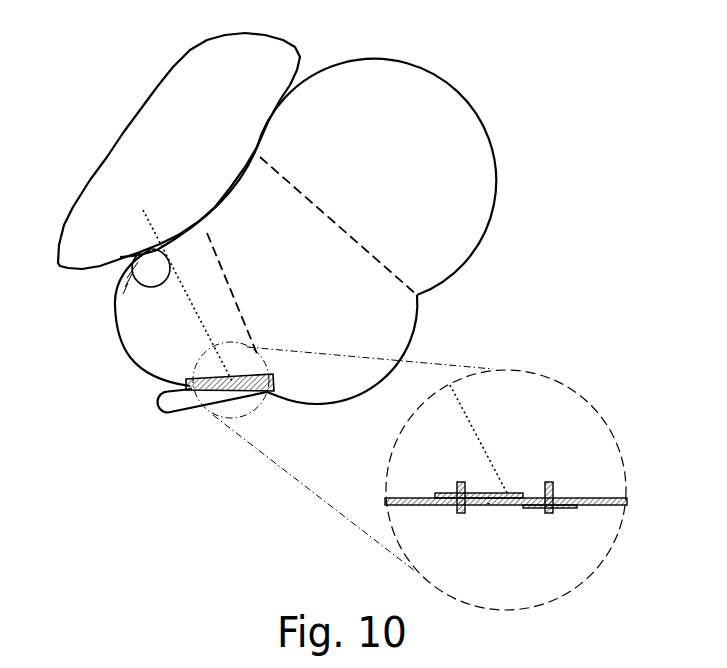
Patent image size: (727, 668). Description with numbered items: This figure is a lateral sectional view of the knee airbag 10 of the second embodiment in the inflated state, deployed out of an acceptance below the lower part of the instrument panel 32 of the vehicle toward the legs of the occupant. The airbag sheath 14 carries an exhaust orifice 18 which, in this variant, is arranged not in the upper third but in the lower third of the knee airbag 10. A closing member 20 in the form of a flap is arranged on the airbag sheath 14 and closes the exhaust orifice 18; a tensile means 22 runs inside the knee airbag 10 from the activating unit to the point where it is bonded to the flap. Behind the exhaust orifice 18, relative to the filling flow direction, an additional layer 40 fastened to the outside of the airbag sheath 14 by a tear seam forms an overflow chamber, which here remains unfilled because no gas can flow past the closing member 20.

The knee airbag 10 is at (495, 83).
The airbag sheath 14 is at (602, 503).
The exhaust orifice 18 is at (487, 503).
The closing member 20 is at (530, 493).
The tensile means 22 is at (182, 290).
The instrument panel 32 is at (158, 126).
The additional layer 40 is at (150, 365).